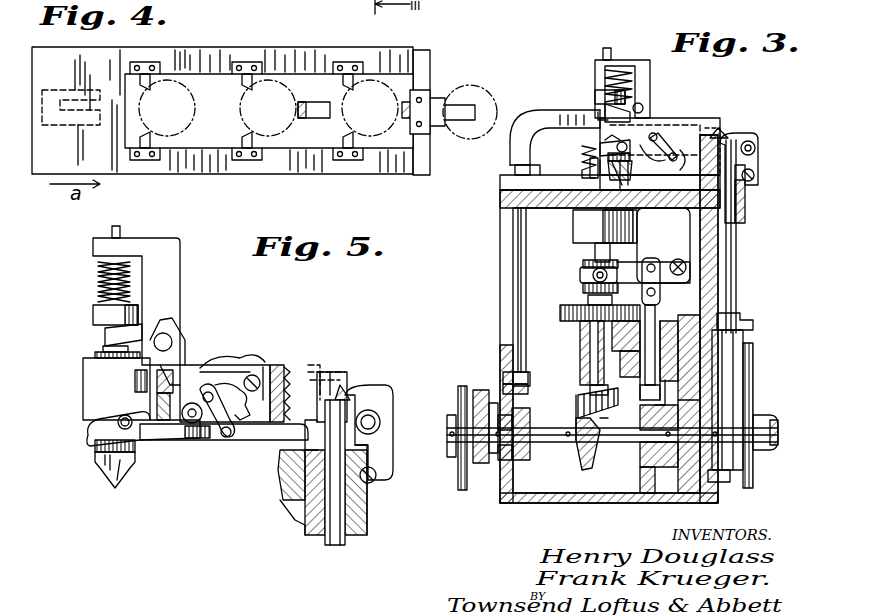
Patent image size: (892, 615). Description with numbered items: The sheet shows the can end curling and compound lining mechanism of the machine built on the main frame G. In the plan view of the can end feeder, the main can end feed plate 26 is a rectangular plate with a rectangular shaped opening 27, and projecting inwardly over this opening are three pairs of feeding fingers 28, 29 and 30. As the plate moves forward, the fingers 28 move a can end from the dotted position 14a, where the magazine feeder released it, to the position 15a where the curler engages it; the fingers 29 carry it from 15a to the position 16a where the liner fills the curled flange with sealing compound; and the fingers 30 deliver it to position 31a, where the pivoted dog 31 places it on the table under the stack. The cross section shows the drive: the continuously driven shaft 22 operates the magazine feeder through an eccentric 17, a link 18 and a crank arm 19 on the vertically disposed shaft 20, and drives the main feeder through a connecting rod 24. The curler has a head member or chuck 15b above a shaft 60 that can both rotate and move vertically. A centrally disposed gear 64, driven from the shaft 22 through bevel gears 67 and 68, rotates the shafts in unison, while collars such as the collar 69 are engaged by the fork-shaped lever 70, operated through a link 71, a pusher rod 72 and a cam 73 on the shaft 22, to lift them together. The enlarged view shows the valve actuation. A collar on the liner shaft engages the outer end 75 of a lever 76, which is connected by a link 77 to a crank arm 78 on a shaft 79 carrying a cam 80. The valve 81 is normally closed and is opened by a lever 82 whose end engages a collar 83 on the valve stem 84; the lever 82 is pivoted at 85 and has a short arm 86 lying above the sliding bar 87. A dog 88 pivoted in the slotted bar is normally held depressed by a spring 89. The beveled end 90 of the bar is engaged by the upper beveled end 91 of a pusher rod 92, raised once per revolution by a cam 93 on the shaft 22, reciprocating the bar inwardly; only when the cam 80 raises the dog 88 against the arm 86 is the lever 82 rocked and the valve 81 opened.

In FIG. 4, the first can end position 14a is at (178, 132).
In FIG. 4, the second can end position 15a is at (283, 132).
In FIG. 3, the head member or chuck 15b is at (585, 185).
In FIG. 4, the third can end position 16a is at (386, 132).
In FIG. 3, the eccentric 17 is at (468, 458).
In FIG. 3, the link 18 is at (490, 378).
In FIG. 3, the crank arm 19 is at (498, 392).
In FIG. 3, the vertically disposed shaft 20 is at (520, 270).
In FIG. 3, the shaft 22 is at (615, 455).
In FIG. 3, the connecting rod 24 is at (765, 400).
In FIG. 4, the main can end feed plate 26 is at (340, 22).
In FIG. 3, the main can end feed plate 26 is at (540, 190).
In FIG. 4, the rectangular shaped opening 27 is at (246, 111).
In FIG. 4, the feeding fingers 28 is at (150, 84).
In FIG. 4, the feeding fingers 29 is at (240, 76).
In FIG. 4, the feeding fingers 30 is at (347, 85).
In FIG. 4, the pivoted dog 31 is at (445, 130).
In FIG. 4, the delivery position 31a is at (505, 62).
In FIG. 3, the shaft 60 is at (585, 253).
In FIG. 3, the centrally disposed gear 64 is at (580, 308).
In FIG. 3, the bevel gear 67 is at (578, 465).
In FIG. 3, the bevel gear 68 is at (582, 392).
In FIG. 3, the collar 69 is at (585, 277).
In FIG. 3, the fork-shaped lever 70 is at (630, 270).
In FIG. 3, the link 71 is at (660, 292).
In FIG. 3, the pusher rod 72 is at (660, 317).
In FIG. 3, the cam 73 is at (650, 470).
In FIG. 5, the outer end of lever 75 is at (88, 438).
In FIG. 3, the outer end of lever 75 is at (600, 149).
In FIG. 5, the lever 76 is at (145, 443).
In FIG. 3, the lever 76 is at (632, 160).
In FIG. 5, the link 77 is at (232, 424).
In FIG. 3, the link 77 is at (695, 160).
In FIG. 5, the crank arm 78 is at (210, 430).
In FIG. 5, the shaft 79 is at (198, 425).
In FIG. 5, the cam 80 is at (178, 425).
In FIG. 3, the cam 80 is at (665, 175).
In FIG. 5, the valve 81 is at (100, 478).
In FIG. 3, the valve 81 is at (615, 208).
In FIG. 5, the lever 82 is at (140, 330).
In FIG. 3, the lever 82 is at (625, 102).
In FIG. 5, the collar 83 is at (93, 312).
In FIG. 3, the collar 83 is at (600, 90).
In FIG. 5, the valve stem 84 is at (105, 344).
In FIG. 5, the pivot 85 is at (170, 350).
In FIG. 5, the short arm 86 is at (190, 375).
In FIG. 5, the sliding bar 87 is at (330, 372).
In FIG. 3, the sliding bar 87 is at (728, 133).
In FIG. 5, the dog 88 is at (235, 365).
In FIG. 5, the spring 89 is at (292, 380).
In FIG. 5, the beveled end 90 is at (350, 382).
In FIG. 5, the upper beveled end 91 is at (355, 395).
In FIG. 5, the pusher rod 92 is at (325, 540).
In FIG. 3, the pusher rod 92 is at (740, 282).
In FIG. 3, the cam 93 is at (730, 482).
In FIG. 3, the main frame G is at (490, 342).